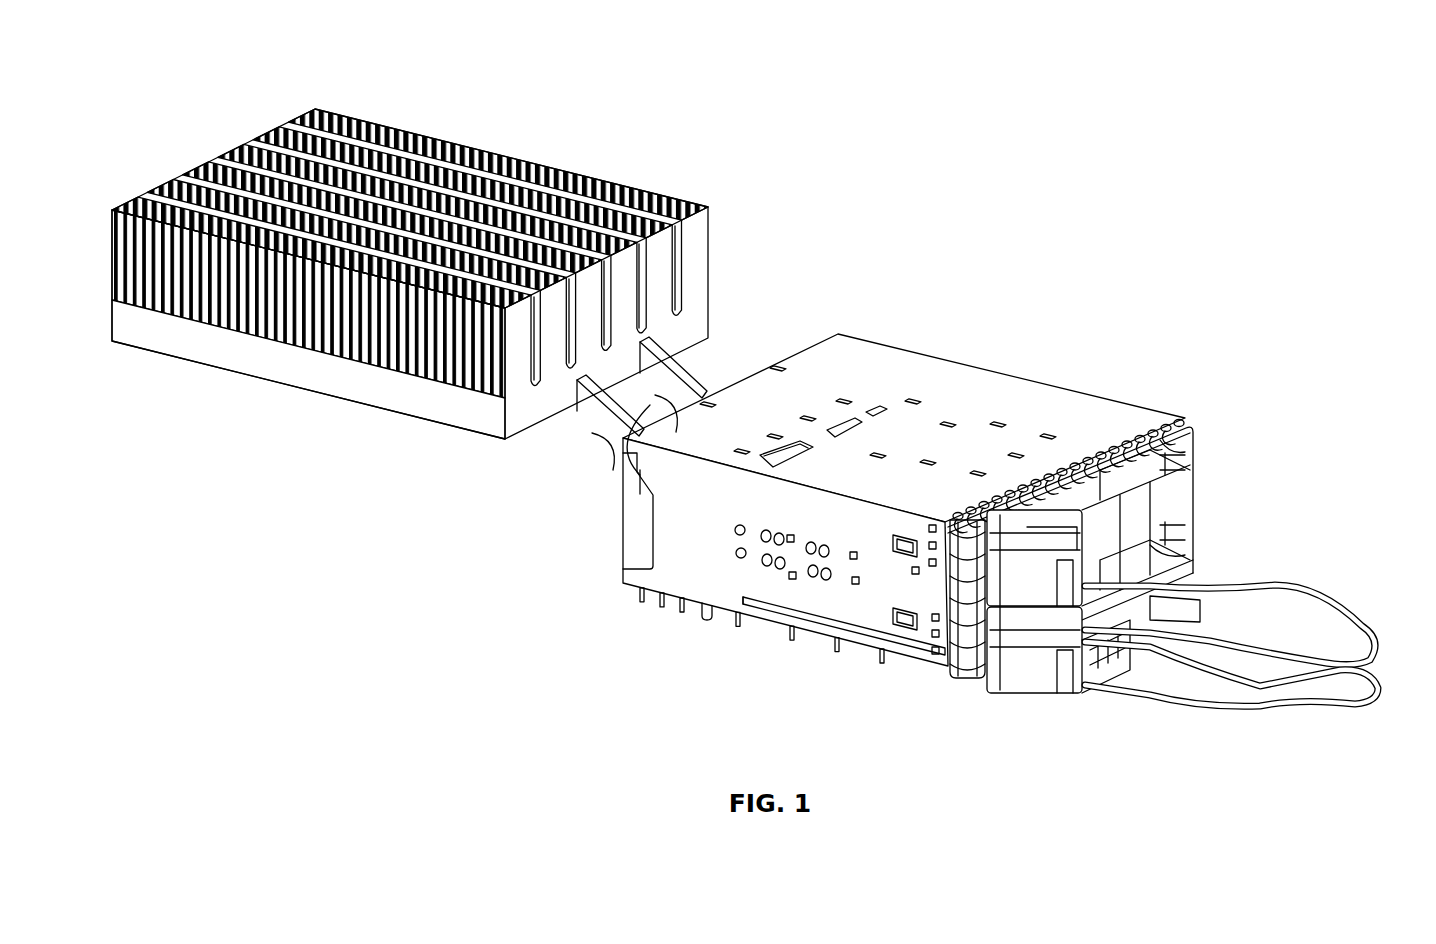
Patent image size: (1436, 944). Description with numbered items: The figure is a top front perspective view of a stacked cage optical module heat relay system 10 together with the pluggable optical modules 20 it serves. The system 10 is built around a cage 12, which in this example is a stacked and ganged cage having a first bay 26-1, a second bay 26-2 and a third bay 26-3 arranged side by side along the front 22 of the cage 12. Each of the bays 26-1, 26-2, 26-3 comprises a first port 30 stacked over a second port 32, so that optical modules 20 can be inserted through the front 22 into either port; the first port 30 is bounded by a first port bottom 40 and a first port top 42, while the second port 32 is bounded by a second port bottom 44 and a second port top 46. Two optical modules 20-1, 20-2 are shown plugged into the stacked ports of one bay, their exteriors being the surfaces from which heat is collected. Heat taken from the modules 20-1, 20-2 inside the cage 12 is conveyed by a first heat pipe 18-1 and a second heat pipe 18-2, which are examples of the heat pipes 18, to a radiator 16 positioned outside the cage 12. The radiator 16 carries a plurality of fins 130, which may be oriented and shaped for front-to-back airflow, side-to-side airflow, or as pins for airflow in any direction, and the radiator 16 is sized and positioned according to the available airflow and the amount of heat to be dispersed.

The stacked cage optical module heat relay system 10 is at (774, 424).
The cage 12 is at (906, 358).
The radiator 16 is at (287, 386).
The heat pipe 18 is at (656, 418).
The first heat pipe 18-1 is at (670, 361).
The second heat pipe 18-2 is at (607, 453).
The pluggable optical module 20 is at (1211, 625).
The first optical module 20-1 is at (1353, 622).
The second optical module 20-2 is at (1359, 707).
The front 22 is at (1198, 428).
The first bay 26-1 is at (990, 487).
The second bay 26-2 is at (1083, 440).
The third bay 26-3 is at (1147, 417).
The first port 30 is at (1176, 446).
The second port 32 is at (1182, 548).
The first port bottom 40 is at (1190, 470).
The first port top 42 is at (1186, 424).
The second port bottom 44 is at (1194, 568).
The second port top 46 is at (1188, 522).
The fins 130 is at (709, 228).